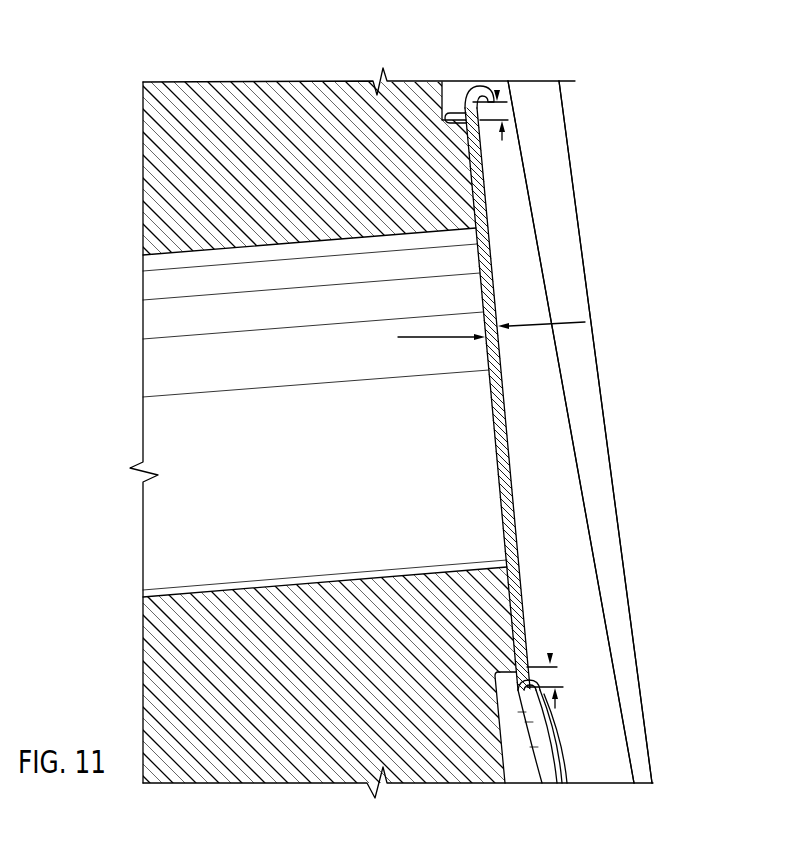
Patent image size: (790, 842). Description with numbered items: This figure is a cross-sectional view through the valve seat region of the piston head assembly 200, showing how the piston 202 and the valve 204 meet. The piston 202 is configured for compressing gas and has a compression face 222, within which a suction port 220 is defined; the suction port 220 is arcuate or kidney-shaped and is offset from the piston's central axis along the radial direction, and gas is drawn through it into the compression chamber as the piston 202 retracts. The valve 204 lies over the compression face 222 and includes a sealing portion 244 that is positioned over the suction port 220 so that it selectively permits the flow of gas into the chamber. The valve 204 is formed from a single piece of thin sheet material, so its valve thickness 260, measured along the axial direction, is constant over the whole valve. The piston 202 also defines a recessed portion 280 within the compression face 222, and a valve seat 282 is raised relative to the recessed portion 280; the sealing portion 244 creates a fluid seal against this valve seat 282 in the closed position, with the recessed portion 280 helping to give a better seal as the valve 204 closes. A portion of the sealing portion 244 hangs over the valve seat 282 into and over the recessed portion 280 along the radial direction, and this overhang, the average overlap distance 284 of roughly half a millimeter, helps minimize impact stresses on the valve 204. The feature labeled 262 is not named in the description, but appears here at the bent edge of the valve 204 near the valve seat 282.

The piston head assembly 200 is at (671, 202).
The piston 202 is at (173, 150).
The valve 204 is at (570, 509).
The suction port 220 is at (372, 429).
The compression face 222 is at (556, 144).
The sealing portion 244 is at (550, 434).
The valve thickness 260 is at (418, 337).
The bent lip 262 is at (546, 758).
The recessed portion 280 is at (452, 95).
The valve seat 282 is at (528, 622).
The average overlap distance 284 is at (497, 92).